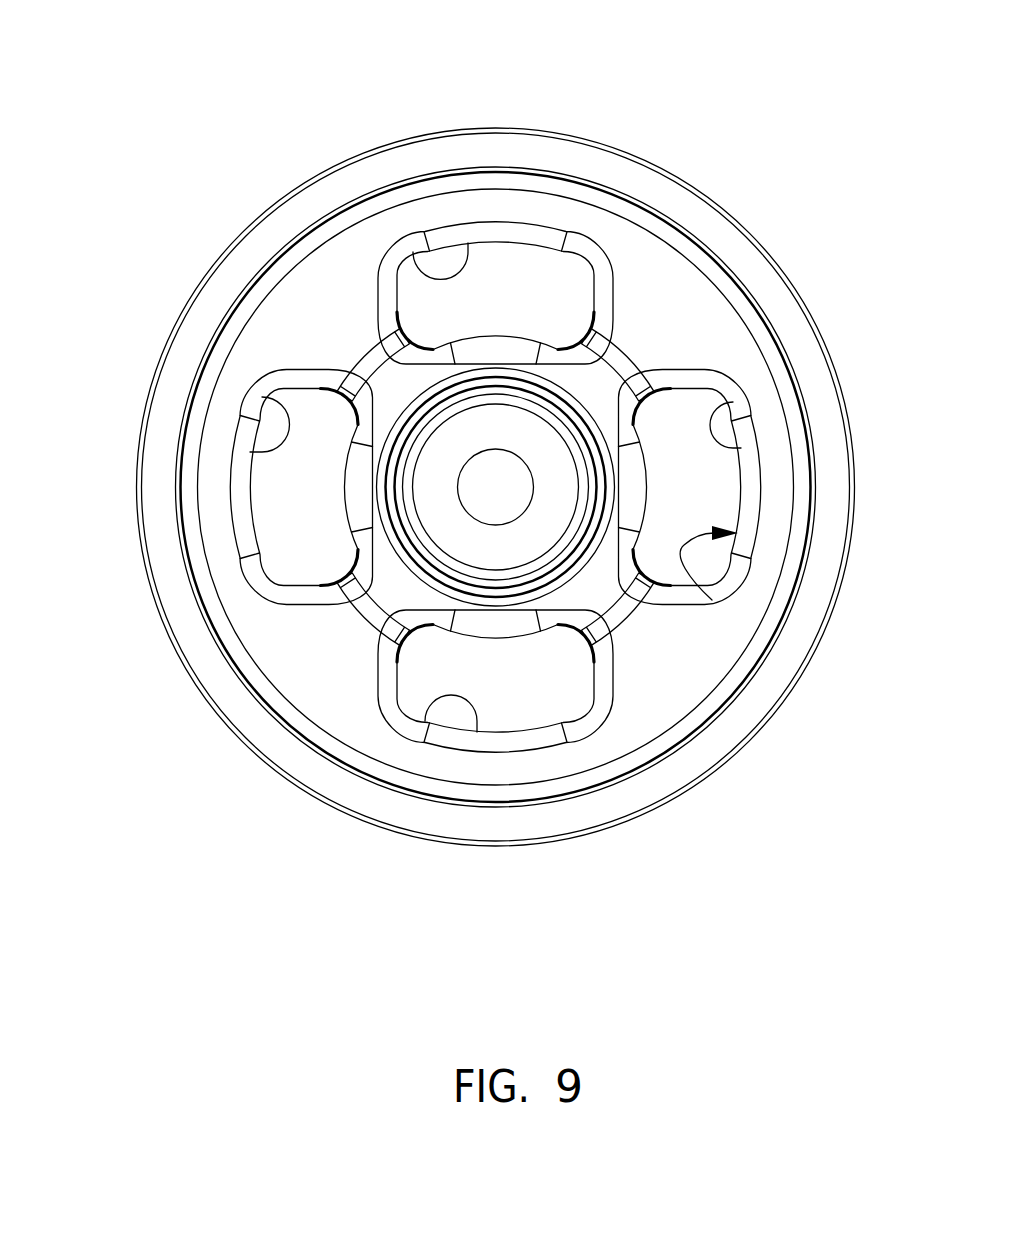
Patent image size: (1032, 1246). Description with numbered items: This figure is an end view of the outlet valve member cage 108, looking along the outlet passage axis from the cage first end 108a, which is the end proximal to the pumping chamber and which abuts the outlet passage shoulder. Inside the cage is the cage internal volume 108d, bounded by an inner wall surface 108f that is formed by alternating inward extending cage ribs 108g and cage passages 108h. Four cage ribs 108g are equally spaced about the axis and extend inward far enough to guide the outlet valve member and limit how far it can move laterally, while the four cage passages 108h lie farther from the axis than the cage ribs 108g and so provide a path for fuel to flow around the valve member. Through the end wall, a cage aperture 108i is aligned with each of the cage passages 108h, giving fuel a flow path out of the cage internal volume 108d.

The outlet valve member cage 108 is at (790, 68).
The cage first end 108a is at (368, 725).
The cage internal volume 108d is at (392, 588).
The inner wall surface 108f is at (712, 600).
The cage ribs 108g is at (368, 365).
The cage passages 108h is at (413, 252).
The cage apertures 108i is at (502, 282).